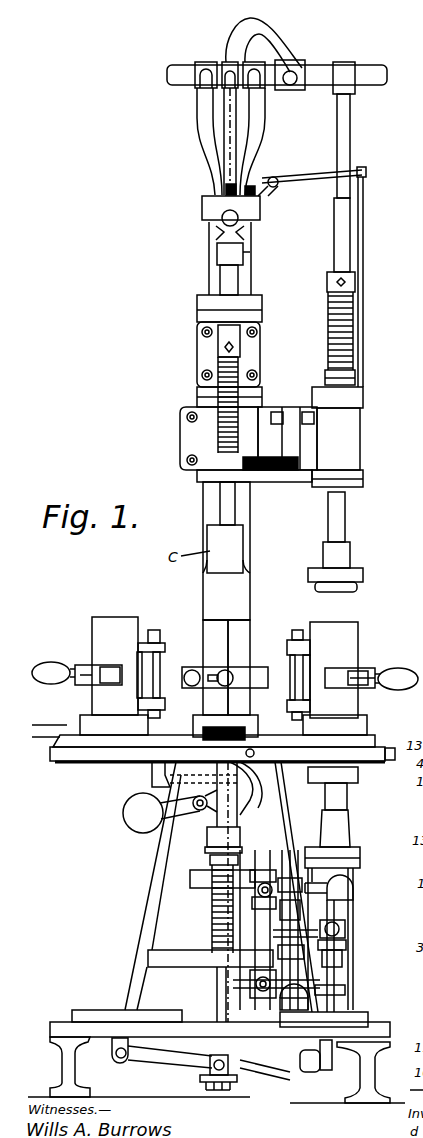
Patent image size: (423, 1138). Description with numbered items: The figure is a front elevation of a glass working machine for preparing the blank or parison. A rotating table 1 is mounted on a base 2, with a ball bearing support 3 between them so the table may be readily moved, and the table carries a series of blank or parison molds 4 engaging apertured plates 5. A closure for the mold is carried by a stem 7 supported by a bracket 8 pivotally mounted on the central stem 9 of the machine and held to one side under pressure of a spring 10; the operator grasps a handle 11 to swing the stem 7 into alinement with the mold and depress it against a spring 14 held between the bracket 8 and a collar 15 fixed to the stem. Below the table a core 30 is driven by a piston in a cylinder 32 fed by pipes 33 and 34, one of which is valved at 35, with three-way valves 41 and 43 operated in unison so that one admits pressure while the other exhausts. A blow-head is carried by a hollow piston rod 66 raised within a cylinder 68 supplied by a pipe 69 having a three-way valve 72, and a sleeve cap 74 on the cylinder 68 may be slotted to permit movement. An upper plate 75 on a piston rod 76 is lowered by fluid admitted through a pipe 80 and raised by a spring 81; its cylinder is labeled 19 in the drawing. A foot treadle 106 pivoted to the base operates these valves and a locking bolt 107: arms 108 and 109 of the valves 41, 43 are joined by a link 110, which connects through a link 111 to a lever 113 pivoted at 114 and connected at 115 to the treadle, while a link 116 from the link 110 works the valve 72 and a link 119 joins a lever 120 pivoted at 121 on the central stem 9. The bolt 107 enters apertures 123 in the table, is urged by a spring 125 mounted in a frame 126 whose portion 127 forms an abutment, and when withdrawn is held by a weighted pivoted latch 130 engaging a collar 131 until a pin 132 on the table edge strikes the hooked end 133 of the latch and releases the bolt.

The rotating table 1 is at (72, 752).
The base 2 is at (88, 1022).
The ball bearing support 3 is at (124, 790).
The blank or parison molds 4 is at (240, 621).
The apertured plates 5 is at (80, 737).
The stem 7 is at (228, 272).
The bracket 8 is at (240, 336).
The central stem 9 is at (210, 281).
The spring 10 is at (272, 470).
The handle 11 is at (203, 226).
The spring 14 is at (197, 385).
The collar 15 is at (218, 346).
The guide block 19 is at (352, 441).
The core 30 is at (283, 780).
The cylinder 32 is at (207, 917).
The pipe or conduit 33 is at (340, 990).
The pipe or conduit 34 is at (355, 882).
The valve 35 is at (333, 775).
The three-way valve 41 is at (276, 984).
The three-way valve 43 is at (263, 880).
The hollow piston rod 66 is at (347, 802).
The cylinder 68 is at (360, 868).
The pipe 69 is at (345, 947).
The three-way valve 72 is at (348, 928).
The sleeve cap 74 is at (350, 827).
The plate 75 is at (364, 575).
The piston rod 76 is at (346, 258).
The pipe 80 is at (351, 138).
The spring 81 is at (354, 314).
The foot treadle 106 is at (207, 1083).
The locking bolt 107 is at (217, 988).
The operating arm 108 is at (281, 999).
The operating arm 109 is at (270, 930).
The link 110 is at (273, 934).
The link 111 is at (310, 1072).
The lever 113 is at (161, 1060).
The pivot 114 is at (120, 1062).
The connection 115 is at (258, 1070).
The link 116 is at (330, 900).
The link 119 is at (365, 208).
The lever 120 is at (313, 176).
The pivot 121 is at (276, 188).
The apertures 123 is at (215, 752).
The spring 125 is at (212, 895).
The frame 126 is at (155, 851).
The abutment portion 127 is at (181, 950).
The pivoted latch 130 is at (205, 814).
The collar 131 is at (240, 830).
The pin 132 is at (255, 753).
The hooked end 133 is at (246, 737).